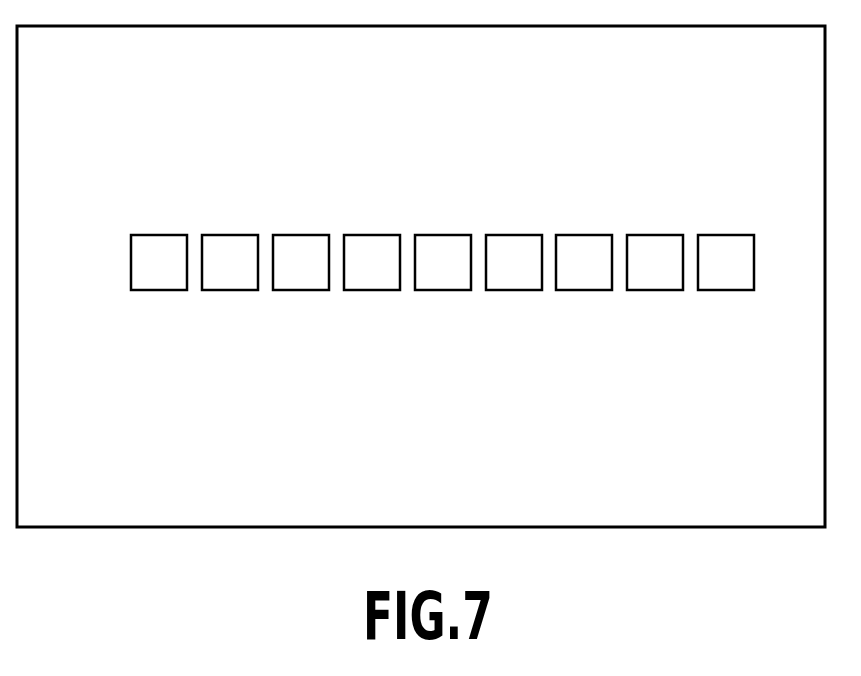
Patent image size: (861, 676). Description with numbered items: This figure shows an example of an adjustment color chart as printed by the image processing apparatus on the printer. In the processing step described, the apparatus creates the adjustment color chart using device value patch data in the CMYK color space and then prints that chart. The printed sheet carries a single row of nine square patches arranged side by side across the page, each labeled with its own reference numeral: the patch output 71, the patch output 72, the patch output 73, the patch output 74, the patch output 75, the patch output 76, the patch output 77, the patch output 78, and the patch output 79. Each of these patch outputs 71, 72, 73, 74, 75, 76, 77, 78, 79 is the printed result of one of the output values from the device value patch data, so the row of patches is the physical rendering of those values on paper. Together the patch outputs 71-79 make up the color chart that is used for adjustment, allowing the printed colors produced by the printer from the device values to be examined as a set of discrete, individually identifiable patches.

The patch output 71 is at (159, 240).
The patch output 72 is at (230, 240).
The patch output 73 is at (301, 240).
The patch output 74 is at (372, 240).
The patch output 75 is at (443, 240).
The patch output 76 is at (514, 240).
The patch output 77 is at (584, 240).
The patch output 78 is at (655, 240).
The patch output 79 is at (726, 240).